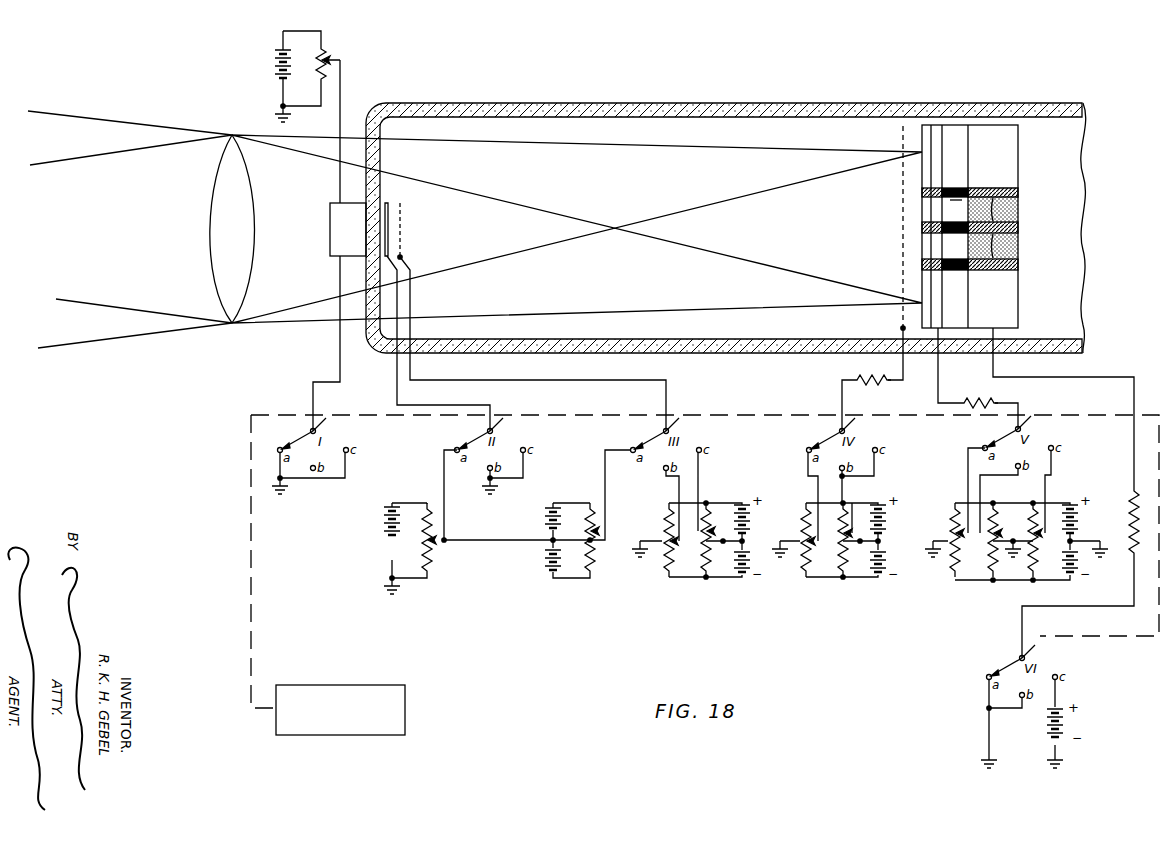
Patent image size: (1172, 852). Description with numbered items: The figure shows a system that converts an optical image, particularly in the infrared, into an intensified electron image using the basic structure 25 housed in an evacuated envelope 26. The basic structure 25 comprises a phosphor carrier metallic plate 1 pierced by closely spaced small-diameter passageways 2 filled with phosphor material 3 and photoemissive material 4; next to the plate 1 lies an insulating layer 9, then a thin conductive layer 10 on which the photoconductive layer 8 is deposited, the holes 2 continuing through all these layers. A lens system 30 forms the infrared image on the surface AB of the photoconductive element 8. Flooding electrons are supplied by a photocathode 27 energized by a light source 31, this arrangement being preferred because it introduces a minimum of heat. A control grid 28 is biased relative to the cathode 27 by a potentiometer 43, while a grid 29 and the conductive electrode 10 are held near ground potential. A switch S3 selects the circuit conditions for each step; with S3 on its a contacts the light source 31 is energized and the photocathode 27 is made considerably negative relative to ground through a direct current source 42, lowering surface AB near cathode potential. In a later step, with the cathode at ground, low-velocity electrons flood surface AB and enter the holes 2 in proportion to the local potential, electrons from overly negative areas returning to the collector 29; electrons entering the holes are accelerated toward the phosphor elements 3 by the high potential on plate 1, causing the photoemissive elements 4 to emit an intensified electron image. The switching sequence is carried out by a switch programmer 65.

The phosphor carrier metallic plate 1 is at (996, 127).
The passageways 2 is at (985, 182).
The phosphor material 3 is at (975, 202).
The photoemissive material 4 is at (1005, 213).
The photoconductive layer 8 is at (1018, 193).
The insulating layer 9 is at (955, 127).
The conductive layer 10 is at (937, 127).
The basic structure 25 is at (1047, 310).
The envelope 26 is at (720, 103).
The photocathode 27 is at (389, 206).
The control grid 28 is at (401, 226).
The grid 29 is at (900, 250).
The lens system 30 is at (224, 287).
The light source 31 is at (329, 220).
The direct current source 42 is at (388, 538).
The potentiometer 43 is at (596, 546).
The switch programmer 65 is at (366, 685).
The switch S3 is at (452, 420).